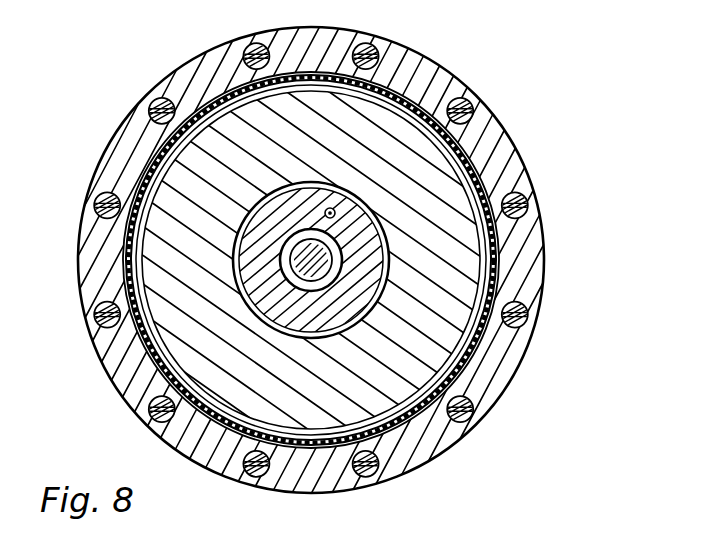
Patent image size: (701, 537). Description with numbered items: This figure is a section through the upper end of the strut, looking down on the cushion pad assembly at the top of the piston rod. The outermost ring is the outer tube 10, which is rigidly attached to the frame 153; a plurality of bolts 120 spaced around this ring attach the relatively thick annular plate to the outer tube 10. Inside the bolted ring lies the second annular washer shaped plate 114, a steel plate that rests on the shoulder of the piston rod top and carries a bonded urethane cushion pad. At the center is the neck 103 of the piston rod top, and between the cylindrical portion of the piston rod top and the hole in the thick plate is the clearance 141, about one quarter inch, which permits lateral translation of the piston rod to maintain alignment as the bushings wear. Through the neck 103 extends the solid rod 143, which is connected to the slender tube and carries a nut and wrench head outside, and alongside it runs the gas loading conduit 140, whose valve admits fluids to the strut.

The outer tube 10 is at (490, 132).
The bolts 120 is at (462, 99).
The second annular washer shaped plate 114 is at (457, 193).
The frame 153 is at (482, 338).
The gas loading conduit 140 is at (350, 198).
The clearance 141 is at (366, 216).
The neck 103 is at (355, 247).
The solid rod 143 is at (318, 273).